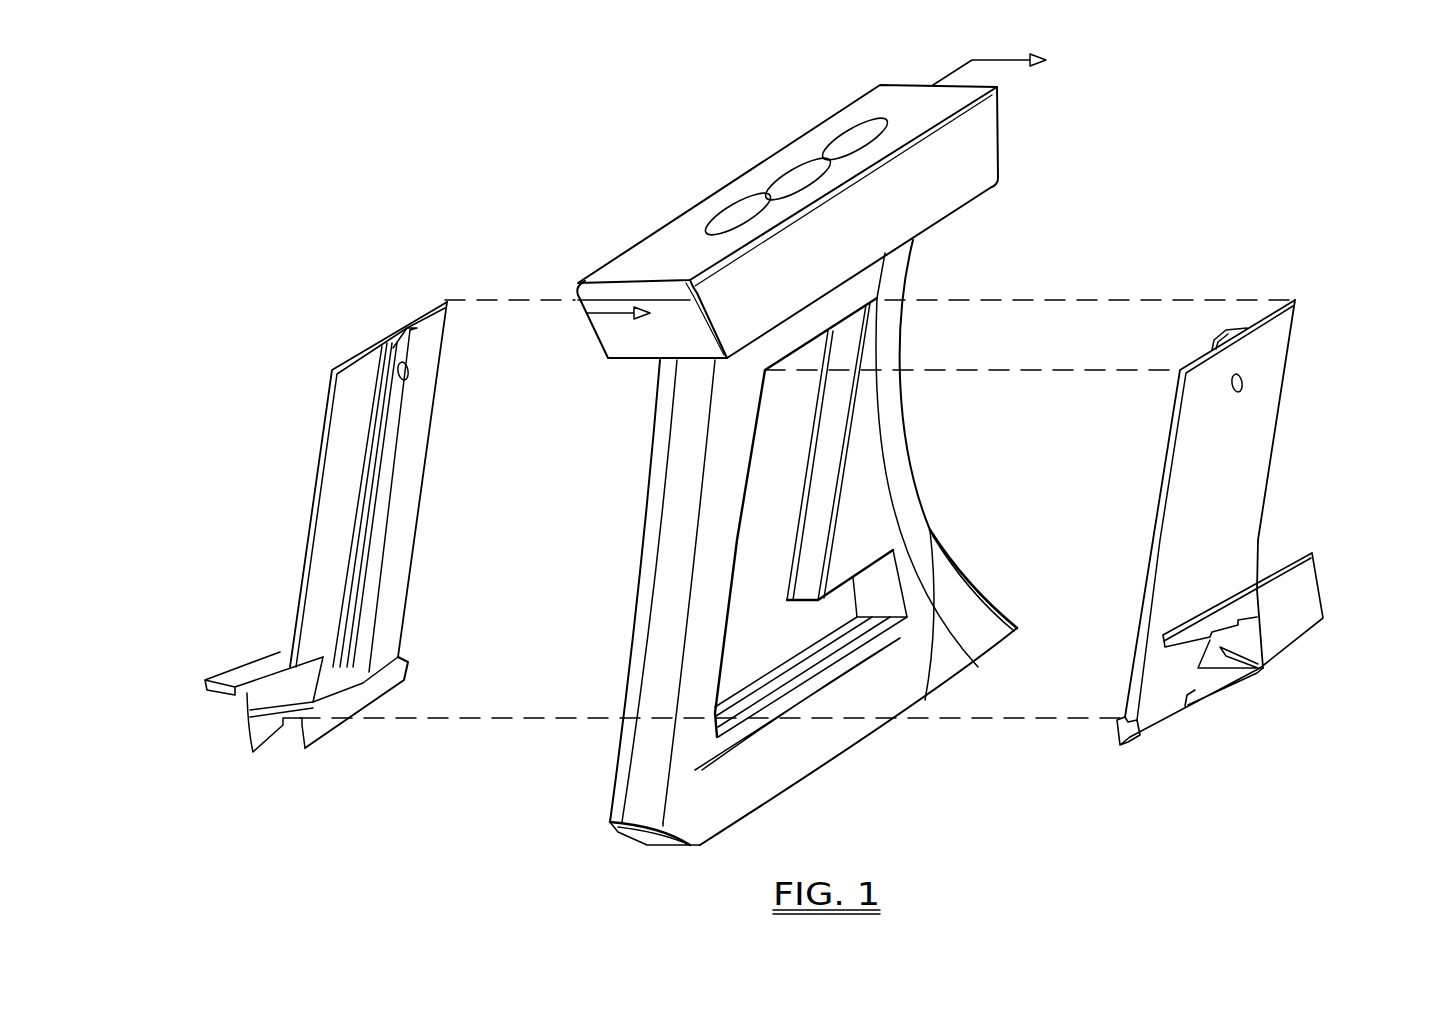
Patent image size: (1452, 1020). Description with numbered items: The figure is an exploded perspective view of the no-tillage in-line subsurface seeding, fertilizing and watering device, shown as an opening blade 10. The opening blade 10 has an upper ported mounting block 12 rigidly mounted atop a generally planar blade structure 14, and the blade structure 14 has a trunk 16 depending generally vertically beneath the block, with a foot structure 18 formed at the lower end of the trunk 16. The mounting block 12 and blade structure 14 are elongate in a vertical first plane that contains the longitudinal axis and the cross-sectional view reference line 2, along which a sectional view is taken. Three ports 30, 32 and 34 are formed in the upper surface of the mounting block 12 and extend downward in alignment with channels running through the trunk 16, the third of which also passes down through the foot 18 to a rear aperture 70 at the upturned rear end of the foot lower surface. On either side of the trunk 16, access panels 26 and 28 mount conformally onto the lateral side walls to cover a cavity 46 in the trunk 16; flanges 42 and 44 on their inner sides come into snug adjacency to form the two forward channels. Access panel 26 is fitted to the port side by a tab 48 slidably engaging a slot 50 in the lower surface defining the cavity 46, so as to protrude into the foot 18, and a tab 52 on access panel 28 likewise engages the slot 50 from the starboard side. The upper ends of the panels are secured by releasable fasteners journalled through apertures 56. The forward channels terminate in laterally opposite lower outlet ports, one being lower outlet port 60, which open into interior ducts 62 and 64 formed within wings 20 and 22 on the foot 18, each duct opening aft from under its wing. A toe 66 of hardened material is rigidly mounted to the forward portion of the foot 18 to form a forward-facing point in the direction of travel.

The cross-sectional view reference line 2 is at (805, 190).
The opening blade 10 is at (1060, 115).
The upper ported mounting block 12 is at (997, 155).
The blade structure 14 is at (970, 473).
The trunk 16 is at (658, 512).
The foot structure 18 is at (536, 790).
The wing 20 is at (259, 657).
The wing 22 is at (1227, 692).
The access panel 26 is at (408, 292).
The access panel 28 is at (1270, 483).
The port 30 is at (855, 135).
The port 32 is at (787, 178).
The port 34 is at (732, 215).
The flange 42 is at (400, 343).
The flange 44 is at (1225, 332).
The cavity 46 is at (825, 451).
The tab 48 is at (387, 697).
The slot 50 is at (742, 712).
The tab 52 is at (1135, 745).
The apertures 56 is at (408, 378).
The lower outlet port 60 is at (292, 693).
The interior duct 62 is at (230, 727).
The interior duct 64 is at (1253, 680).
The toe 66 is at (958, 677).
The rear aperture 70 is at (627, 840).